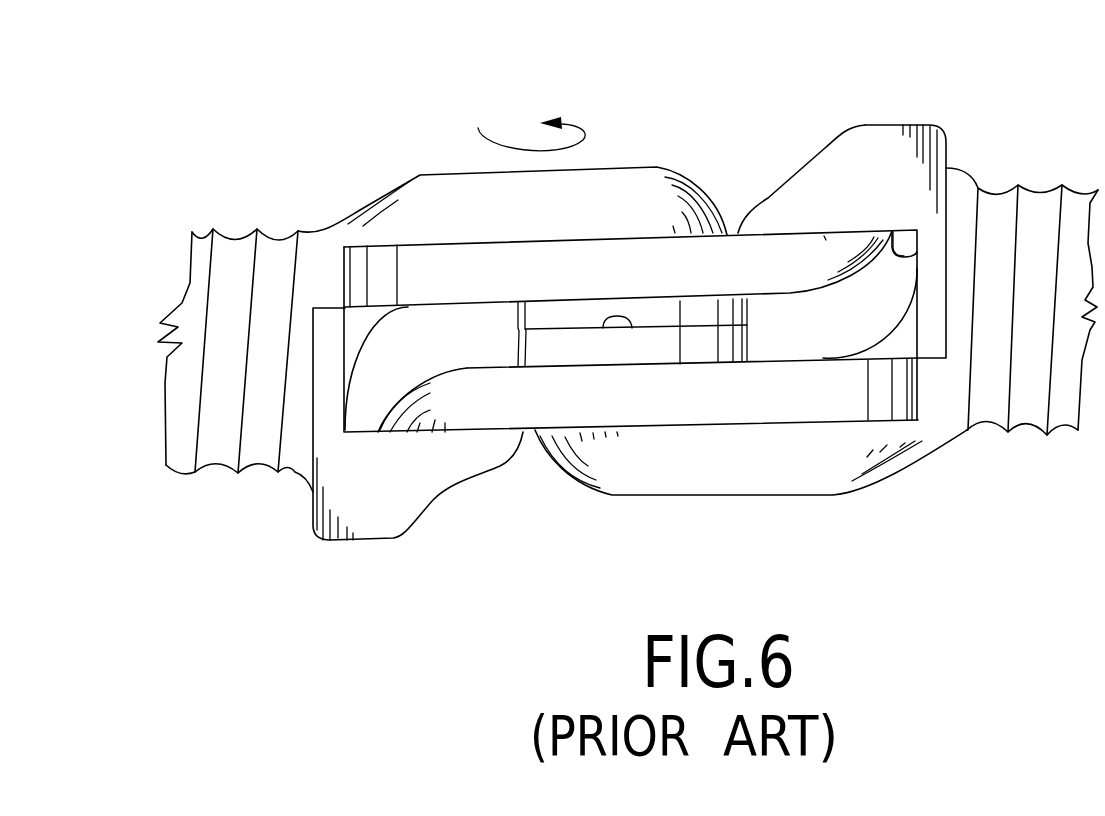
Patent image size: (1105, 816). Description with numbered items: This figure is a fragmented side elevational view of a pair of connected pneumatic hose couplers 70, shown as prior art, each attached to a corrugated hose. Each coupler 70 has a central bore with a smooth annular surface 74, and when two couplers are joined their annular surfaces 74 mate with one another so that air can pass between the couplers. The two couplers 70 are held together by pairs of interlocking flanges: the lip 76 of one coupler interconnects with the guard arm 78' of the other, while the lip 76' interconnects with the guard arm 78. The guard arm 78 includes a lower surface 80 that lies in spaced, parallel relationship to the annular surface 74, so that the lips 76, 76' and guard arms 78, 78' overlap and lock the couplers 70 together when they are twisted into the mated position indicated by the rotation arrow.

The pneumatic hose coupler 70 is at (373, 178).
The smooth annular surface 74 is at (632, 328).
The lip 76 is at (631, 426).
The lip 76' is at (630, 331).
The guard arm 78 is at (842, 214).
The guard arm 78' is at (418, 458).
The lower surface 80 is at (903, 262).